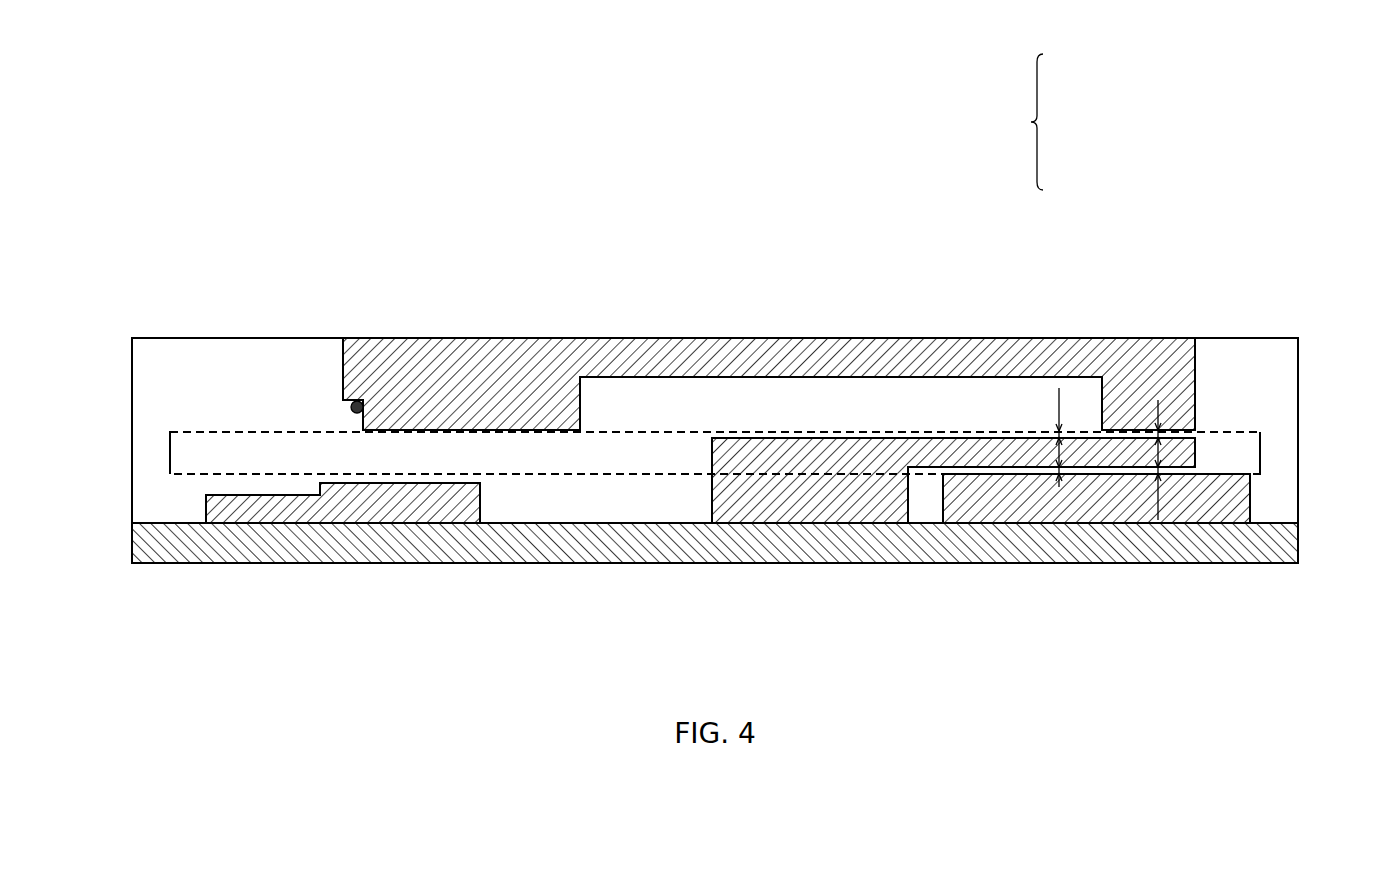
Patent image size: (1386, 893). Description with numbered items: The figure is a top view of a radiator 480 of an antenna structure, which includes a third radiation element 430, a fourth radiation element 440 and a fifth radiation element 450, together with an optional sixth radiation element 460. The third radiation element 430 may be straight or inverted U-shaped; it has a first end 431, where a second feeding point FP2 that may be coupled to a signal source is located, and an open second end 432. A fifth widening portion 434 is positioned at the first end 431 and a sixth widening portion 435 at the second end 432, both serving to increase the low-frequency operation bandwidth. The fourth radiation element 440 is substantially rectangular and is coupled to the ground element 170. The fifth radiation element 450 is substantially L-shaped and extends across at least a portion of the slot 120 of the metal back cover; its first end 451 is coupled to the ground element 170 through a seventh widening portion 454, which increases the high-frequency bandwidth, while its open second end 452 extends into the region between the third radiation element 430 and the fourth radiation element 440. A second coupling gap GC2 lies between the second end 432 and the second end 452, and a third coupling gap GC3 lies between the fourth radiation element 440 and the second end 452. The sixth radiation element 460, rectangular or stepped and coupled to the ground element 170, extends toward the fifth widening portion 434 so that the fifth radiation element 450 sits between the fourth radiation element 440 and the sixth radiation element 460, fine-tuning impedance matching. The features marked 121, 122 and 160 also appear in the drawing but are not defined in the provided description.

The slot 120 is at (683, 430).
The first side of chip 121 is at (170, 453).
The second side of chip 122 is at (1262, 453).
The housing 160 is at (1270, 338).
The ground element 170 is at (592, 550).
The third radiation element 430 is at (790, 362).
The first end of third radiation element 431 is at (343, 362).
The second end of third radiation element 432 is at (1132, 418).
The fifth widening portion 434 is at (472, 425).
The sixth widening portion 435 is at (1120, 395).
The fourth radiation element 440 is at (1090, 500).
The fifth radiation element 450 is at (870, 453).
The first end of fifth radiation element 451 is at (712, 500).
The second end of fifth radiation element 452 is at (1197, 453).
The seventh widening portion 454 is at (812, 500).
The sixth radiation element 460 is at (400, 500).
The radiator 480 is at (1039, 122).
The second feeding point FP2 is at (350, 408).
The second coupling gap GC2 is at (1027, 437).
The third coupling gap GC3 is at (1160, 400).